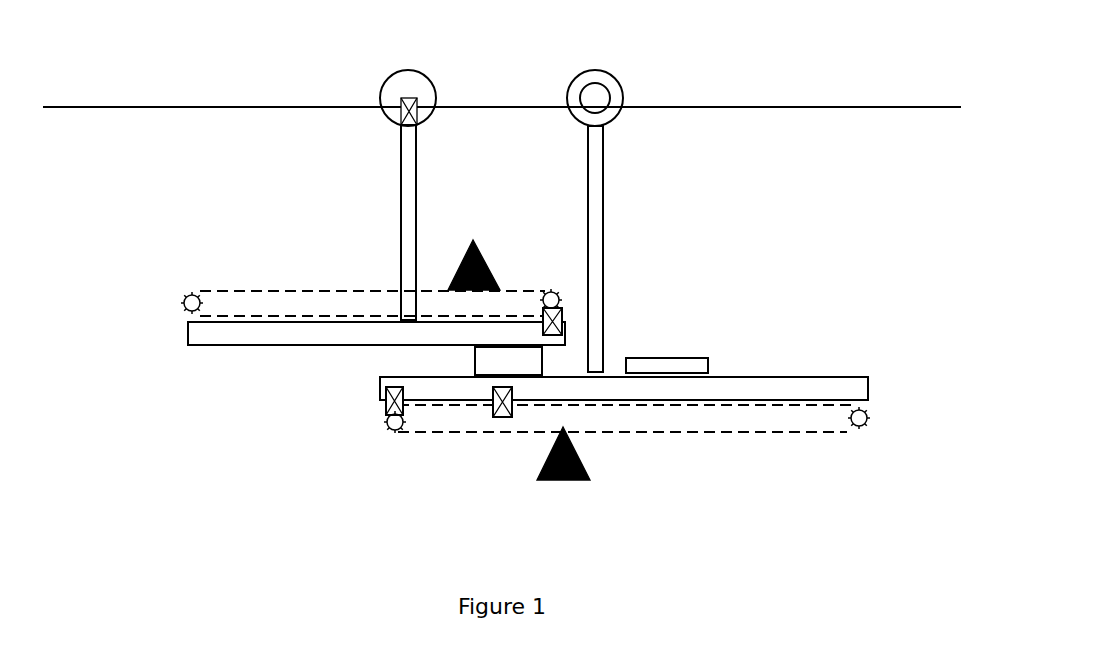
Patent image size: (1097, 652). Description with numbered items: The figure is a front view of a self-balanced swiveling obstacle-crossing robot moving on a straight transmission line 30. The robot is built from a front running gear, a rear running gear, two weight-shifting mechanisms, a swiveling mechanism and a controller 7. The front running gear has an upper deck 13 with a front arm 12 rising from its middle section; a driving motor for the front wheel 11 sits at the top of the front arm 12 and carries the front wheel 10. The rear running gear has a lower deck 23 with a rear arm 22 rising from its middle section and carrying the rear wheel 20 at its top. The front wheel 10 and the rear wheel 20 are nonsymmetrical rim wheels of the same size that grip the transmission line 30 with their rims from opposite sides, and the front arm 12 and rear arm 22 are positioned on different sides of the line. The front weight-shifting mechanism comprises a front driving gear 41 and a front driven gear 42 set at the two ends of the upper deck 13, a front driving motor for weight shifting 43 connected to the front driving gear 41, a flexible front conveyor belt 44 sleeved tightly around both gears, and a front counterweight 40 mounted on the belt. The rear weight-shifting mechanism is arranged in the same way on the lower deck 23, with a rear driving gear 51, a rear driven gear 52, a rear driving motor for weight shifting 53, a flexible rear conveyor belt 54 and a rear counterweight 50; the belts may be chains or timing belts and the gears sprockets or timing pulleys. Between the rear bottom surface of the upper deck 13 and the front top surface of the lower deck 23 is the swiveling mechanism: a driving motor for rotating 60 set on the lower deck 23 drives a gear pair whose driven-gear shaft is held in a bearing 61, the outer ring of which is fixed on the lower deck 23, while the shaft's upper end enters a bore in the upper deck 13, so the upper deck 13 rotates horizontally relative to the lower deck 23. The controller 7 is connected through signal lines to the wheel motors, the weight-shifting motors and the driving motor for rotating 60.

The controller 7 is at (668, 348).
The front wheel 10 is at (430, 77).
The driving motor for the front wheel 11 is at (402, 98).
The front arm 12 is at (398, 218).
The upper deck 13 is at (267, 353).
The rear wheel 20 is at (617, 77).
The rear arm 22 is at (605, 245).
The lower deck 23 is at (811, 375).
The transmission line 30 is at (667, 105).
The front counterweight 40 is at (473, 238).
The front driving gear 41 is at (548, 290).
The front driven gear 42 is at (193, 290).
The front driving motor for weight shifting 43 is at (565, 320).
The flexible front conveyor belt 44 is at (277, 290).
The rear counterweight 50 is at (592, 482).
The rear driving gear 51 is at (393, 433).
The rear driven gear 52 is at (860, 430).
The rear driving motor for weight shifting 53 is at (382, 407).
The flexible rear conveyor belt 54 is at (756, 436).
The driving motor for rotating 60 is at (498, 422).
The bearing 61 is at (546, 357).